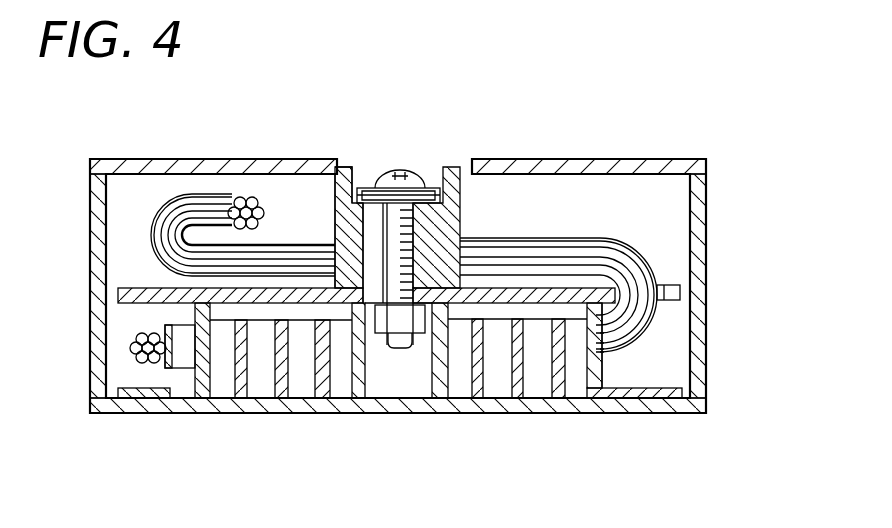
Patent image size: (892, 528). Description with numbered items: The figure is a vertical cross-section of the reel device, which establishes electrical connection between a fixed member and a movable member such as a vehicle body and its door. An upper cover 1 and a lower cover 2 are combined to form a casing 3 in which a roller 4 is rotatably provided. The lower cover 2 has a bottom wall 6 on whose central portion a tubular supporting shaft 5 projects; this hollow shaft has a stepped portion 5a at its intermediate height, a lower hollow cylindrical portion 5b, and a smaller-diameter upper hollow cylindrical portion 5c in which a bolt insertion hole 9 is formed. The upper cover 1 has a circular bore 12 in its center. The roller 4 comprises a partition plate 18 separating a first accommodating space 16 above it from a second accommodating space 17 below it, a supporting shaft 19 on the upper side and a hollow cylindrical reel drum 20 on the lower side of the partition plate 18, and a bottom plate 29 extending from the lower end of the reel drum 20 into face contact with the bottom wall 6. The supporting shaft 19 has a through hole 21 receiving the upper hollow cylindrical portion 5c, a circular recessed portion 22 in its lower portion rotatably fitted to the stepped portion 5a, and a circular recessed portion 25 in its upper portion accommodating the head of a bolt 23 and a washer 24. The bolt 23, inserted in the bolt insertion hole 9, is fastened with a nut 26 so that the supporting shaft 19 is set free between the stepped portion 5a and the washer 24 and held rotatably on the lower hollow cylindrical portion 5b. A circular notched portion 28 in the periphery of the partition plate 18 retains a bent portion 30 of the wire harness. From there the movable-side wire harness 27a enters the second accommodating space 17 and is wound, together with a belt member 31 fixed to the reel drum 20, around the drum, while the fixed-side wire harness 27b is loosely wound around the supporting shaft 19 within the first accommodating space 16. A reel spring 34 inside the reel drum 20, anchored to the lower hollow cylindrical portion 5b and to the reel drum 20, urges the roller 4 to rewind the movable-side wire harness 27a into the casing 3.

The upper cover 1 is at (638, 153).
The lower cover 2 is at (718, 350).
The casing 3 is at (720, 147).
The roller 4 is at (333, 225).
The supporting shaft 5 is at (378, 380).
The stepped portion 5a is at (322, 205).
The lower hollow cylindrical portion 5b is at (356, 375).
The upper hollow cylindrical portion 5c is at (345, 196).
The bottom wall 6 is at (517, 405).
The bolt insertion hole 9 is at (400, 348).
The circular bore 12 is at (370, 238).
The first accommodating space 16 is at (658, 228).
The second accommodating space 17 is at (650, 360).
The partition plate 18 is at (145, 288).
The supporting shaft 19 is at (466, 218).
The reel drum 20 is at (220, 400).
The through hole 21 is at (334, 247).
The circular recessed portion 22 is at (466, 235).
The bolt 23 is at (403, 172).
The washer 24 is at (380, 190).
The circular recessed portion 25 is at (438, 192).
The nut 26 is at (420, 333).
The movable-side wire harness 27a is at (623, 360).
The fixed-side wire harness 27b is at (568, 247).
The circular notched portion 28 is at (657, 268).
The bottom plate 29 is at (658, 396).
The bent portion 30 is at (656, 320).
The belt member 31 is at (170, 393).
The reel spring 34 is at (292, 385).